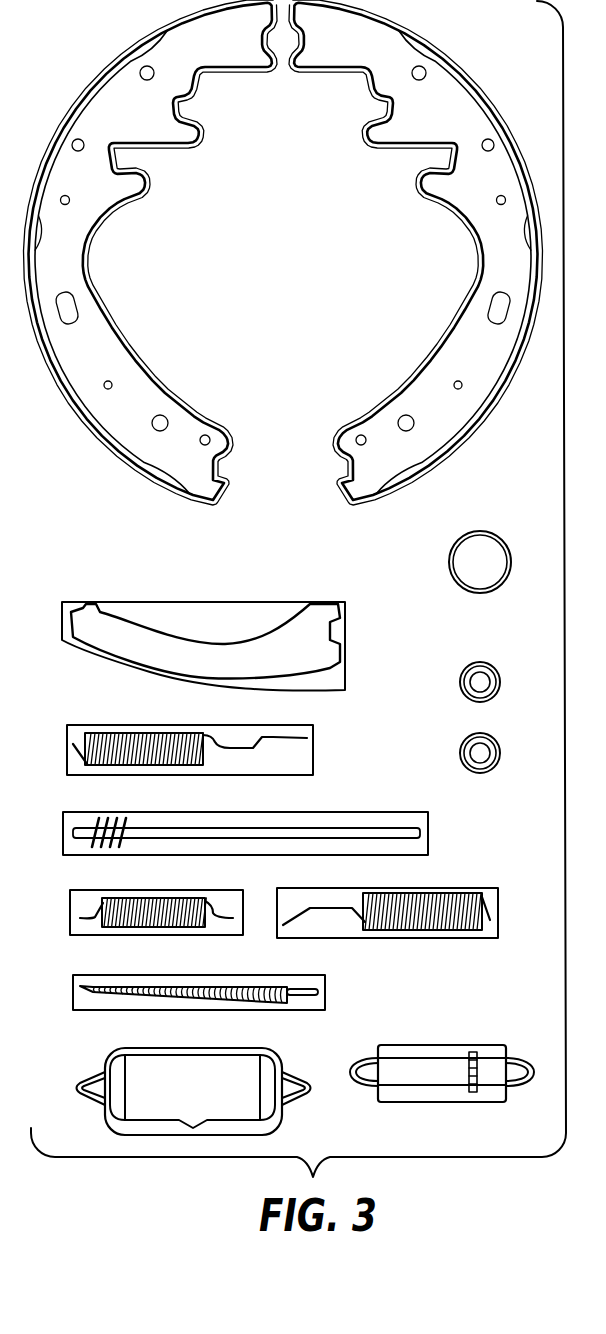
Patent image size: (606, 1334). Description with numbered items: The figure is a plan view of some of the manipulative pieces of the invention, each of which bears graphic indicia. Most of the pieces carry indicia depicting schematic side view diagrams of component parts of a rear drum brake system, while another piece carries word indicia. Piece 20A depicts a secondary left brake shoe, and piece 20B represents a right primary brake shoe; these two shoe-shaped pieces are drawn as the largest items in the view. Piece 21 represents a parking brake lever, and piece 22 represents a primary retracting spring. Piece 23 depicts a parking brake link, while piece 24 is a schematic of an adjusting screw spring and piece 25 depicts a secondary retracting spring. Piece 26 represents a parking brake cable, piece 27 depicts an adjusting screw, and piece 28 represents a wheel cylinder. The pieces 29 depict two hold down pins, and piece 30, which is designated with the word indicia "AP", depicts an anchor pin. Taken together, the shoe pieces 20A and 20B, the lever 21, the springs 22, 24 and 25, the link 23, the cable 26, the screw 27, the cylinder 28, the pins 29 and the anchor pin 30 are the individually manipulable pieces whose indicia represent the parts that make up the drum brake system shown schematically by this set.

The secondary left brake shoe piece 20A is at (175, 388).
The right primary brake shoe piece 20B is at (400, 385).
The parking brake lever piece 21 is at (235, 636).
The primary retracting spring piece 22 is at (310, 762).
The parking brake link piece 23 is at (400, 812).
The adjusting screw spring piece 24 is at (185, 893).
The secondary retracting spring piece 25 is at (465, 890).
The parking brake cable piece 26 is at (328, 1000).
The adjusting screw piece 27 is at (485, 1048).
The wheel cylinder piece 28 is at (272, 1125).
The hold down pin pieces 29 is at (490, 735).
The anchor pin piece 30 is at (485, 533).